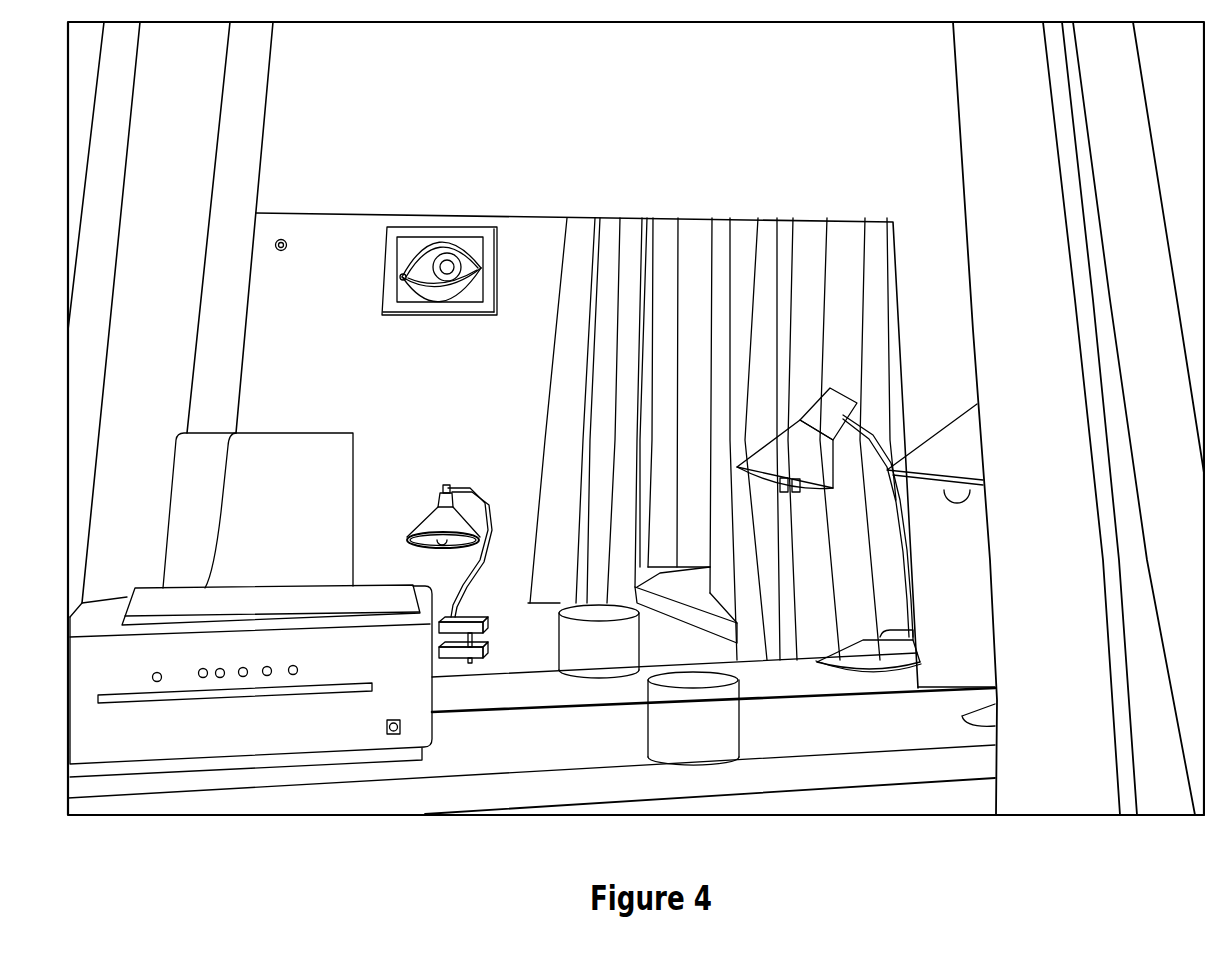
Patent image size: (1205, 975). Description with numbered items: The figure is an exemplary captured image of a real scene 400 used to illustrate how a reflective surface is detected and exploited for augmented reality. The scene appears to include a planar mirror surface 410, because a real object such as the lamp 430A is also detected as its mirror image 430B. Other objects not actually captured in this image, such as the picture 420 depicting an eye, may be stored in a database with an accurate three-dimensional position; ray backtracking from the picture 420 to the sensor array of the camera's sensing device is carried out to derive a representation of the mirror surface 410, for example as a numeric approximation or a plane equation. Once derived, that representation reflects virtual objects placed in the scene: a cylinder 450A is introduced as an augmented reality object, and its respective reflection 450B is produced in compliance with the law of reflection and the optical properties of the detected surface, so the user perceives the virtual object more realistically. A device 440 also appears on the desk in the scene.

The environment 400 is at (172, 862).
The planar mirror surface 410 is at (247, 297).
The picture 420 is at (378, 295).
The lamp 430A is at (965, 413).
The image 430B is at (752, 466).
The device 440 is at (157, 593).
The cylinder 450A is at (732, 703).
The reflection 450B is at (565, 658).